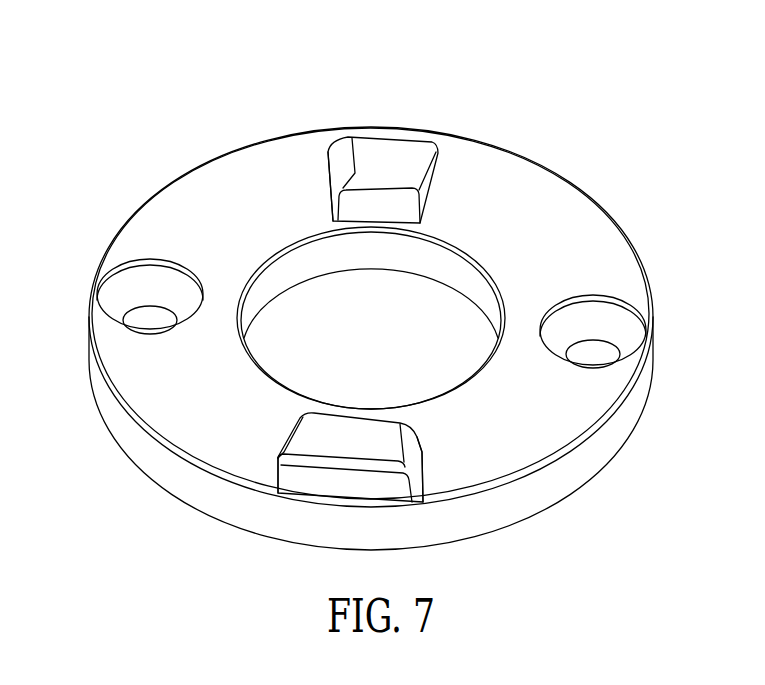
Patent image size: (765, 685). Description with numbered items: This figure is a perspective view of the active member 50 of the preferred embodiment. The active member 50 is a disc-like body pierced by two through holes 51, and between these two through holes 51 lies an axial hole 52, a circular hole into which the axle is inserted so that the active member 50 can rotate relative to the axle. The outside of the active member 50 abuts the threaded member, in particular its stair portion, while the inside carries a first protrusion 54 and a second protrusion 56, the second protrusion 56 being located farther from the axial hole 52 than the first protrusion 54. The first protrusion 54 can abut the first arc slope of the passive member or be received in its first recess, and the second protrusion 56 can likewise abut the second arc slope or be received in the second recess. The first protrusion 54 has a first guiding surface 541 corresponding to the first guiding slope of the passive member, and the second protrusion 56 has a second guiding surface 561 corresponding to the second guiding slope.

The active member 50 is at (113, 188).
The through holes 51 is at (603, 323).
The axial hole 52 is at (448, 352).
The first protrusion 54 is at (397, 163).
The first guiding surface 541 is at (333, 165).
The second protrusion 56 is at (338, 437).
The second guiding surface 561 is at (413, 455).